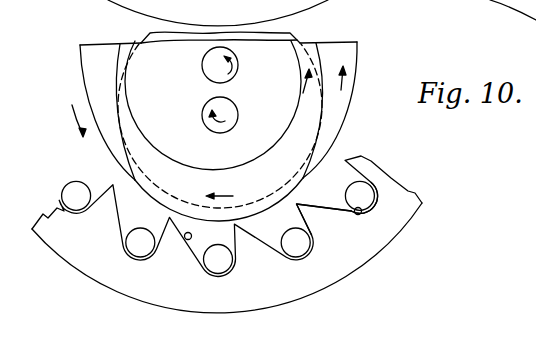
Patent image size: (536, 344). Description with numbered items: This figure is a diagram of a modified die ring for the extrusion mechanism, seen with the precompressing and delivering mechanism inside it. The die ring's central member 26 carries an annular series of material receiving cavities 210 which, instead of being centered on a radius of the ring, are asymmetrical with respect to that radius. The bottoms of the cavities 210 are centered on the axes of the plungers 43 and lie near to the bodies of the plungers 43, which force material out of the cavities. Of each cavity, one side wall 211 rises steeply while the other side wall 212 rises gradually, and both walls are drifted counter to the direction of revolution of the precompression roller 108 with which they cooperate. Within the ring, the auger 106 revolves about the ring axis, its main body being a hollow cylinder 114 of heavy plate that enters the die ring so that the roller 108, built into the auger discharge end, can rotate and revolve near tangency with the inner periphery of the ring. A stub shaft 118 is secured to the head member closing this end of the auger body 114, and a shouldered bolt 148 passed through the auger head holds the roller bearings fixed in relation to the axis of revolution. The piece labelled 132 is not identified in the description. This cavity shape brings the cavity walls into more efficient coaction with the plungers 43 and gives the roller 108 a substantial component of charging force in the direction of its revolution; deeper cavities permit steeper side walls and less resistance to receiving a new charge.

The central member 26 is at (333, 271).
The plungers 43 is at (140, 244).
The auger 106 is at (351, 53).
The precompression roller 108 is at (313, 123).
The hollow cylinder 114 is at (270, 149).
The stub shaft 118 is at (238, 63).
The left shoe segment 132 is at (93, 72).
The shouldered bolt 148 is at (202, 109).
The cavities 210 is at (359, 212).
The side wall 211 is at (295, 207).
The side wall 212 is at (186, 240).